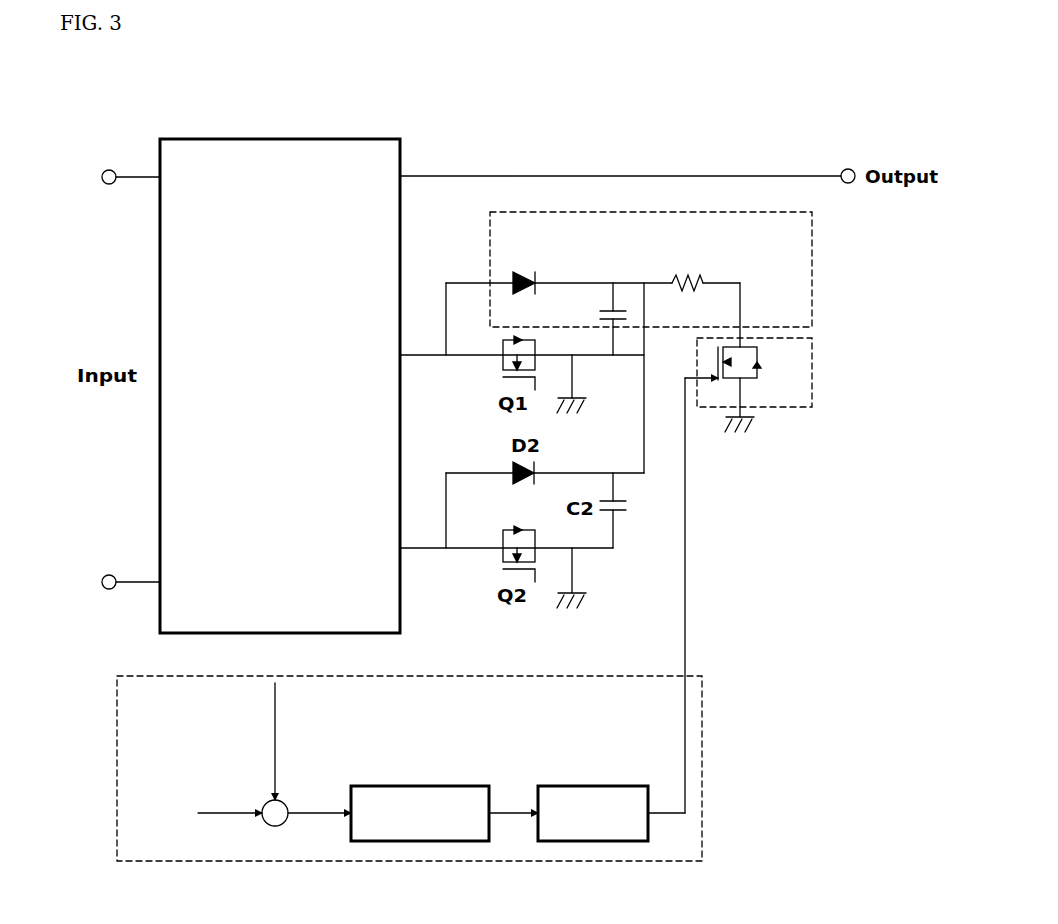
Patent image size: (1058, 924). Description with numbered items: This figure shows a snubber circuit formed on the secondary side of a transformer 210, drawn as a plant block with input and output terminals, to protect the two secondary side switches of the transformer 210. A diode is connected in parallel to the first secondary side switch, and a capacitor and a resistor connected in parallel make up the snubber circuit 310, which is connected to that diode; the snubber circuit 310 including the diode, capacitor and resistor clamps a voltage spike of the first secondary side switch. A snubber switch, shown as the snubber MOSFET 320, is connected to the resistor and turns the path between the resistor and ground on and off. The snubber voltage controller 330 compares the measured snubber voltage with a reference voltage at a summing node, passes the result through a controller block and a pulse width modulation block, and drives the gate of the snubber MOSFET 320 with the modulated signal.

The transformer 210 is at (353, 139).
The snubber circuit 310 is at (812, 259).
The snubber switch Q3 320 is at (812, 364).
The controller 330 is at (702, 730).